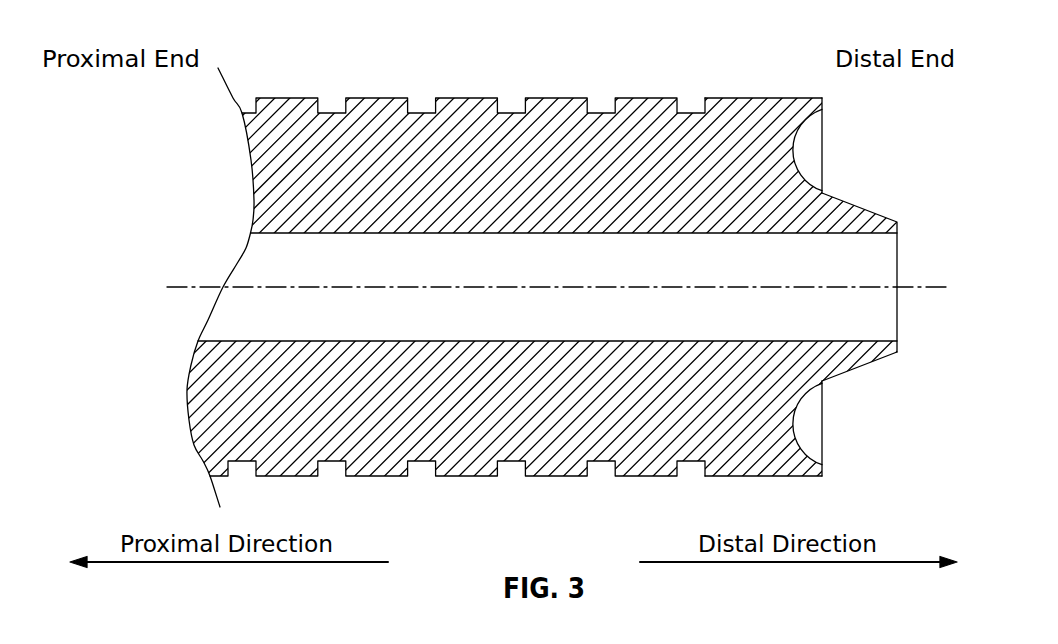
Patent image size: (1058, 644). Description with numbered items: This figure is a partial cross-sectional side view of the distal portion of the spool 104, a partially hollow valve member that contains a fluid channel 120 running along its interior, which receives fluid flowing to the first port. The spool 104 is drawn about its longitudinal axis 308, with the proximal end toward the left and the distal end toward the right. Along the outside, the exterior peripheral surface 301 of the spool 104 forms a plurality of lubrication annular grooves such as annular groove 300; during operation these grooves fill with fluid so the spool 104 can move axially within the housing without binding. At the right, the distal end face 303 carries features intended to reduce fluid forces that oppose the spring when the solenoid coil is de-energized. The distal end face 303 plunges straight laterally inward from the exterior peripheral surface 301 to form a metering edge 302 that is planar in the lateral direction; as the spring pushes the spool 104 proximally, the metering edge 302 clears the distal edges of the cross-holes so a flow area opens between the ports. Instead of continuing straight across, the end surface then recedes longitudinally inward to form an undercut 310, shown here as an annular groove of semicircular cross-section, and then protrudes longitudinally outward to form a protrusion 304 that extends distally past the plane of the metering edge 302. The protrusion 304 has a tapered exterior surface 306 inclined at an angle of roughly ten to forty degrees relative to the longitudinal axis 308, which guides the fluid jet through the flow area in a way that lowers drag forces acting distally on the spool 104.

The spool 104 is at (265, 42).
The annular groove 300 is at (428, 97).
The exterior peripheral surface 301 is at (749, 96).
The metering edge 302 is at (836, 107).
The distal end face 303 is at (880, 395).
The protrusion 304 is at (886, 200).
The tapered exterior surface 306 is at (836, 194).
The longitudinal axis 308 is at (170, 272).
The undercut 310 is at (813, 422).
The fluid channel 120 is at (553, 329).